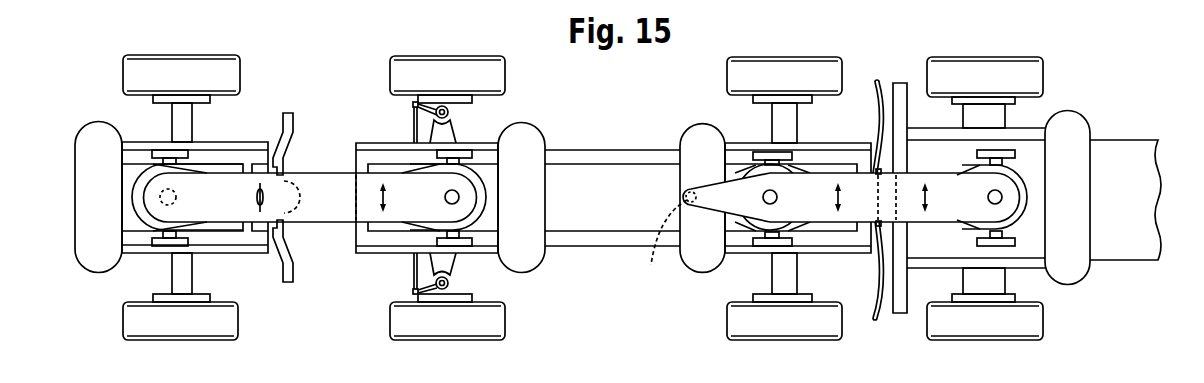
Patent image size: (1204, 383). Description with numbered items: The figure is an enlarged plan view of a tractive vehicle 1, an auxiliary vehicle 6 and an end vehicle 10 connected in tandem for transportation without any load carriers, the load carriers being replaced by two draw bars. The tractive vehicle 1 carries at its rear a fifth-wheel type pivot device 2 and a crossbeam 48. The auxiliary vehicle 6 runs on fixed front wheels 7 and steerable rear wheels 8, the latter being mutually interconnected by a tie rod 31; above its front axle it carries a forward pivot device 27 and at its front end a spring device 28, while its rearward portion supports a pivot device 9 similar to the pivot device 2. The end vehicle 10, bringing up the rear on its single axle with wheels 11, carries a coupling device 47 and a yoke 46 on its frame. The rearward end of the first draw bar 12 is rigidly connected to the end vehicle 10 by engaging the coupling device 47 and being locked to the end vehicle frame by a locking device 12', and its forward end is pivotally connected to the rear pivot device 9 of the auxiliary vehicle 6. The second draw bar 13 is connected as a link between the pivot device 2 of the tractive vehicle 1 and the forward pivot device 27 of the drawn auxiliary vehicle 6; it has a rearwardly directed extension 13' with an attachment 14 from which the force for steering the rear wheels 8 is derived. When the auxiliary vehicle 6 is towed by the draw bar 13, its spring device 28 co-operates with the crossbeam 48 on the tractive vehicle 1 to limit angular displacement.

The tractive vehicle 1 is at (1110, 132).
The pivot device 2 is at (1017, 218).
The auxiliary vehicle 6 is at (612, 136).
The wheels 7 is at (736, 74).
The wheels 8 is at (499, 79).
The pivot device 9 is at (436, 169).
The end vehicle 10 is at (251, 118).
The wheels 11 is at (132, 72).
The draw bar 12 is at (310, 227).
The locking device 12' is at (261, 241).
The draw bar 13 is at (902, 138).
The rearwardly directed extension 13' is at (851, 234).
The attachment 14 is at (661, 239).
The pivot device 27 is at (788, 172).
The spring device 28 is at (869, 272).
The tie rod 31 is at (415, 263).
The yoke 46 is at (289, 143).
The coupling device 47 is at (183, 224).
The crossbeam 48 is at (908, 305).